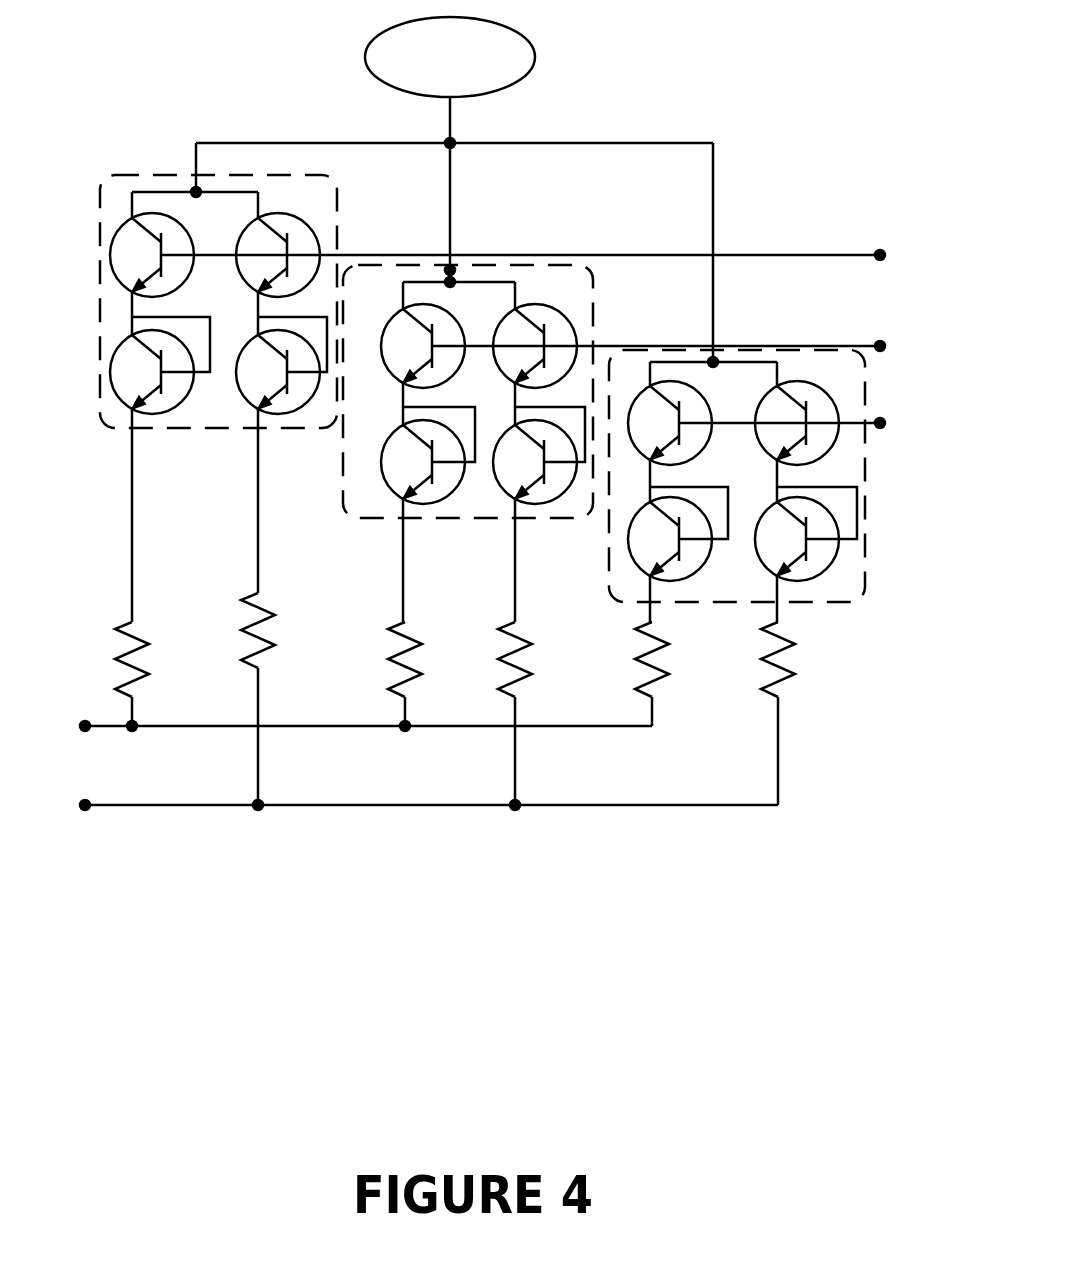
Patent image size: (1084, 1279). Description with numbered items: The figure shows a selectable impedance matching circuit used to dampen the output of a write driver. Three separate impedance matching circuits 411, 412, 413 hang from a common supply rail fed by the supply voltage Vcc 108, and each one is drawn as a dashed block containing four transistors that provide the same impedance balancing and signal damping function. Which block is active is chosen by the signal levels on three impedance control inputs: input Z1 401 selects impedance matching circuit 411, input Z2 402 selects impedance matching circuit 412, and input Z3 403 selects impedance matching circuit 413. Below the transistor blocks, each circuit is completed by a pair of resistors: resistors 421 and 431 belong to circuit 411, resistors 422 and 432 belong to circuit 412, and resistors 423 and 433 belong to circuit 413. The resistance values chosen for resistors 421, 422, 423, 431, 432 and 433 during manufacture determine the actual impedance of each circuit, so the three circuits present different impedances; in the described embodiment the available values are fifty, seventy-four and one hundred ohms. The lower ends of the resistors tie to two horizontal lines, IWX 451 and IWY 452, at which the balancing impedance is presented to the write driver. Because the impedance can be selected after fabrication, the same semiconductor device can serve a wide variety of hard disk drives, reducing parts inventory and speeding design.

The supply voltage Vcc 108 is at (467, 79).
The impedance control input Z1 401 is at (537, 252).
The impedance control input Z2 402 is at (674, 343).
The impedance control input Z3 403 is at (797, 421).
The impedance matching circuit 411 is at (233, 423).
The impedance matching circuit 412 is at (496, 512).
The impedance matching circuit 413 is at (756, 594).
The resistor 421 is at (113, 674).
The resistor 422 is at (386, 674).
The resistor 423 is at (633, 674).
The resistor 431 is at (238, 699).
The resistor 432 is at (497, 713).
The resistor 433 is at (758, 713).
The IWX 451 is at (366, 738).
The IWY 452 is at (429, 815).